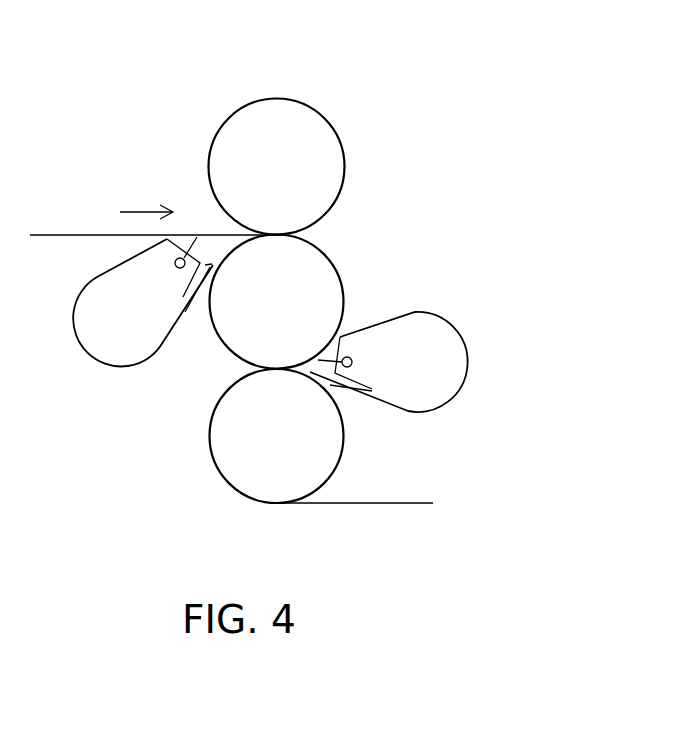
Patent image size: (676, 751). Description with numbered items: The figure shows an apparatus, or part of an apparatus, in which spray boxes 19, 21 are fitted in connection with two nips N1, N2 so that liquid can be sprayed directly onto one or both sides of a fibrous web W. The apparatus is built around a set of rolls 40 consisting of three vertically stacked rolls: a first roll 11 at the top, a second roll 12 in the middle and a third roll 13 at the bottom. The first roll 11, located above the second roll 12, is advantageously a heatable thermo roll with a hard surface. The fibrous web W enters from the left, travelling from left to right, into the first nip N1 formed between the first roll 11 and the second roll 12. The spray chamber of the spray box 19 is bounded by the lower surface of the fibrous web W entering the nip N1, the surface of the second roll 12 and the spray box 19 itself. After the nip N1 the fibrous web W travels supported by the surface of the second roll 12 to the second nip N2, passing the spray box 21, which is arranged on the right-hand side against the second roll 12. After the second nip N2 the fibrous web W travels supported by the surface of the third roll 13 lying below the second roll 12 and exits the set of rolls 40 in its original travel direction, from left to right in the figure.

The set of rolls 40 is at (341, 78).
The first roll 11 is at (335, 167).
The second roll 12 is at (327, 275).
The third roll 13 is at (330, 430).
The spray box 19 is at (100, 340).
The spray box 21 is at (458, 358).
The fibrous web W is at (55, 235).
The first nip N1 is at (214, 218).
The second nip N2 is at (228, 374).